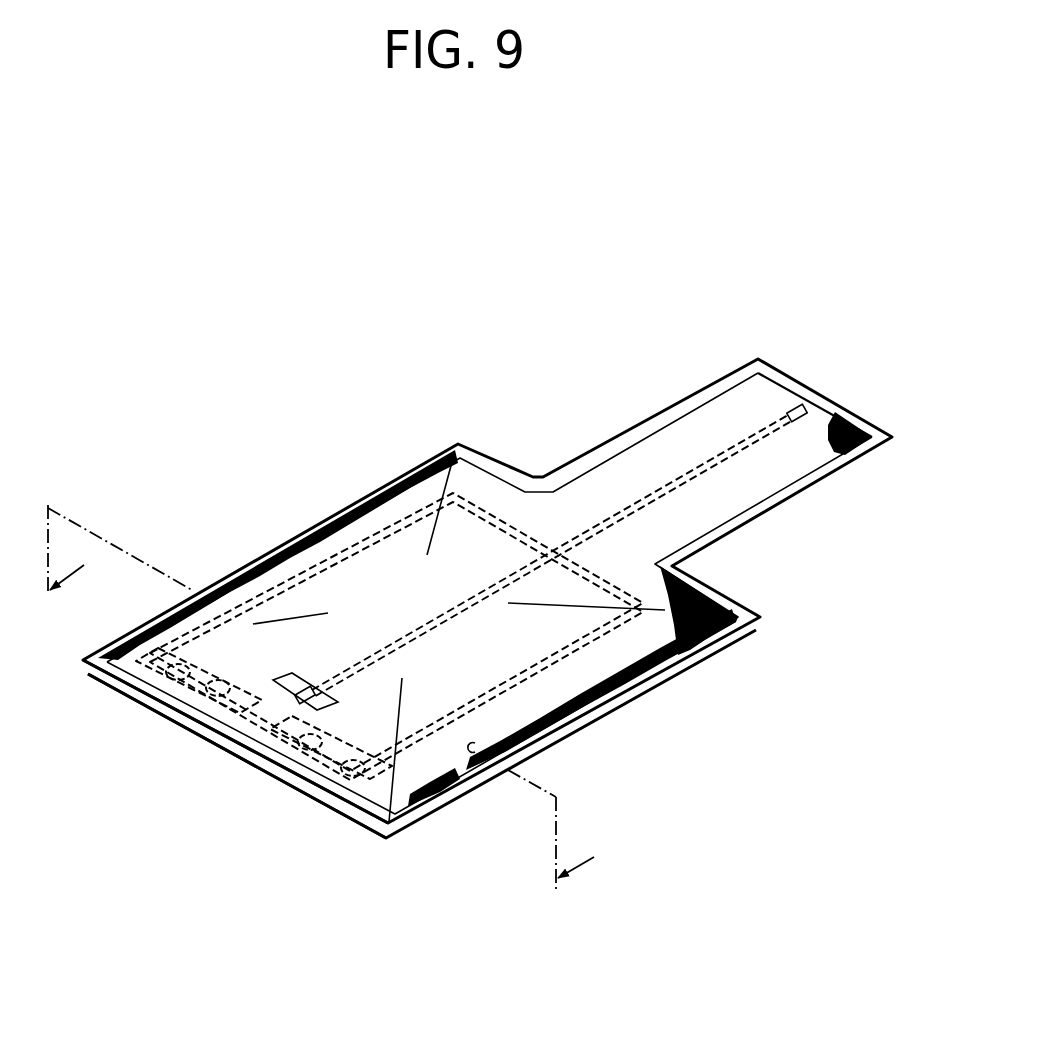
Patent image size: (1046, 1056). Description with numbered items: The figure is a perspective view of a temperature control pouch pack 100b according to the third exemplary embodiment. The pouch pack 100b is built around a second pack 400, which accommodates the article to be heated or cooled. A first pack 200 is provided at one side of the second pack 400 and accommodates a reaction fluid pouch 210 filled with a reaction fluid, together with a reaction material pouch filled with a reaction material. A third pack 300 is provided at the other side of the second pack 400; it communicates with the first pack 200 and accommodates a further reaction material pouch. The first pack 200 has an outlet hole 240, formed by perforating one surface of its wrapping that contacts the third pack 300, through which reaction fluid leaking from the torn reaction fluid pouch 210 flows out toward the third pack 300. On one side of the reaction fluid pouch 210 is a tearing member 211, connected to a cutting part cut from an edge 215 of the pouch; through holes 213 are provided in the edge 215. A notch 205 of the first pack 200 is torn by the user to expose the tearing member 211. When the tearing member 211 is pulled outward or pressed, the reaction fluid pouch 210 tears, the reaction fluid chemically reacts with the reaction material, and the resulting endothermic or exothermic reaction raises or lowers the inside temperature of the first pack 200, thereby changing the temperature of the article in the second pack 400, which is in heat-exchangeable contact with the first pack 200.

The temperature control pouch pack 100b is at (160, 450).
The first pack 200 is at (610, 665).
The notch 205 is at (713, 390).
The reaction fluid pouch 210 is at (362, 562).
The tearing member 211 is at (645, 495).
The through holes 213 is at (352, 773).
The edge 215 is at (318, 757).
The outlet hole 240 is at (528, 752).
The third pack 300 is at (165, 727).
The second pack 400 is at (235, 752).